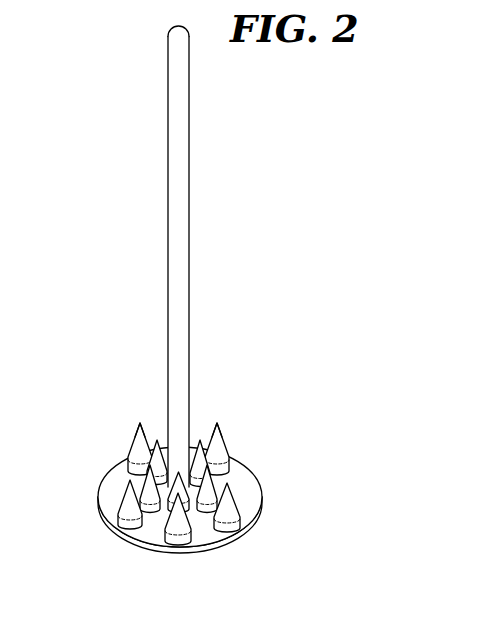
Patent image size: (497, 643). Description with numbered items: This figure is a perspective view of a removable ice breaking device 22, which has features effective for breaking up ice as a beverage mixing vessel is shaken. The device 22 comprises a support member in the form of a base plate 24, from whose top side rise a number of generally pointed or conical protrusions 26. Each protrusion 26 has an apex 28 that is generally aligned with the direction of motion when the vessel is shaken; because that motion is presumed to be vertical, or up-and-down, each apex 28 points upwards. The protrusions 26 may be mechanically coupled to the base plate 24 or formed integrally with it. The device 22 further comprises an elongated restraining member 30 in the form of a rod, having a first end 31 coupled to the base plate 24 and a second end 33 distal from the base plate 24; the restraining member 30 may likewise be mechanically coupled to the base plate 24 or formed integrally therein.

The ice breaking device 22 is at (90, 196).
The base plate 24 is at (98, 503).
The conical protrusions 26 is at (128, 453).
The apex 28 is at (140, 421).
The restraining member 30 is at (168, 152).
The first end 31 is at (165, 493).
The second end 33 is at (178, 25).